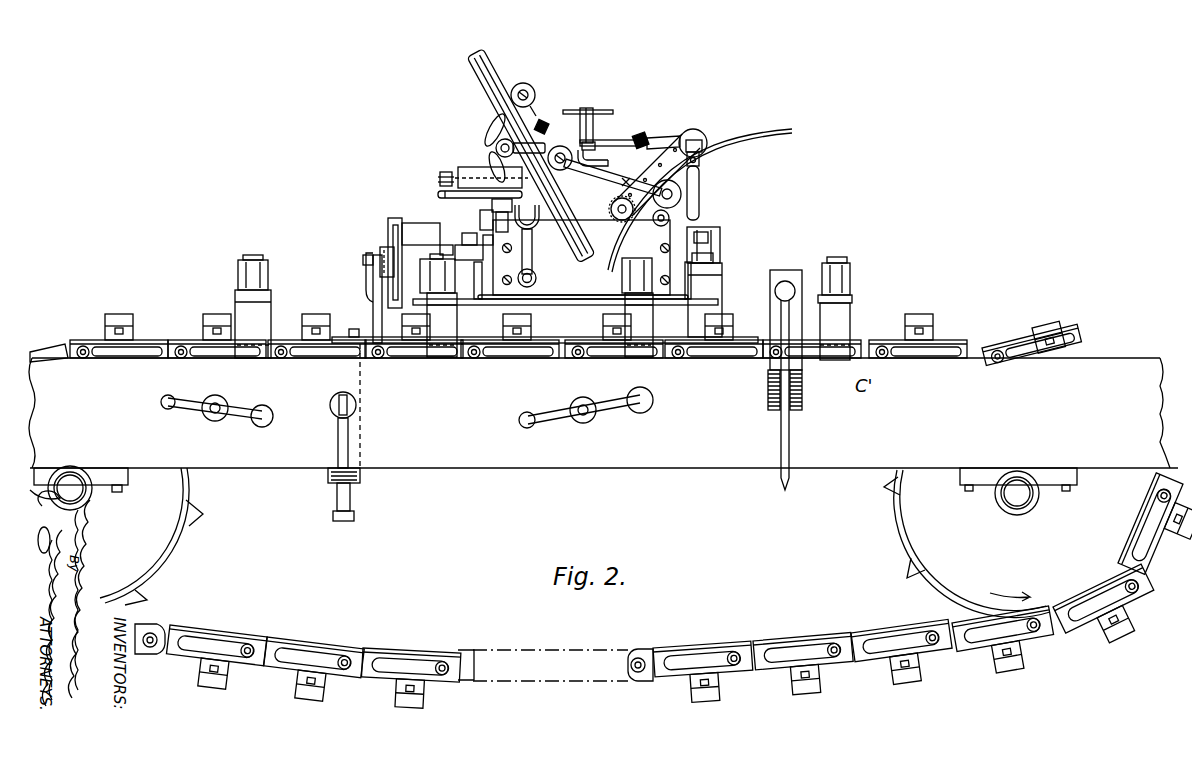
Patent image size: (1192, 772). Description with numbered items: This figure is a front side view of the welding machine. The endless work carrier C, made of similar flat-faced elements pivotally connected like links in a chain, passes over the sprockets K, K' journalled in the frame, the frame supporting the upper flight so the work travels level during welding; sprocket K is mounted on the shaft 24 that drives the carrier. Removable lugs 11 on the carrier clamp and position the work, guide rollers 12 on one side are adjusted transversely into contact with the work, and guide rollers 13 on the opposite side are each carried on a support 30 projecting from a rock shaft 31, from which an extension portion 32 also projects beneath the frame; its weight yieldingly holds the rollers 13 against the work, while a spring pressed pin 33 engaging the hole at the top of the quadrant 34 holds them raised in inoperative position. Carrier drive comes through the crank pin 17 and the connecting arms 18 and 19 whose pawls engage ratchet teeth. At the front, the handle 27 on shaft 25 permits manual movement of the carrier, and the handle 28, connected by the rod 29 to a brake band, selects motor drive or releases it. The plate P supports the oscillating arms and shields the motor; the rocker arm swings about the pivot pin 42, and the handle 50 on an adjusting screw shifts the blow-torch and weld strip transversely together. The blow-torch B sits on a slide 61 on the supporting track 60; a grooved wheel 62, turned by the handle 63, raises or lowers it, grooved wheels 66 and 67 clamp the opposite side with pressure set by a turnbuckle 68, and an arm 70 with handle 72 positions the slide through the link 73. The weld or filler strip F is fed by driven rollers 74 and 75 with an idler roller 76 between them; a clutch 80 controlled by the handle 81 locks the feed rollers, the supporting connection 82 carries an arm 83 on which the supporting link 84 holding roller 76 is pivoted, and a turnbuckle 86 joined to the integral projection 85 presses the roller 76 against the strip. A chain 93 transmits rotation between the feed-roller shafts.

The removable lugs 11 is at (118, 318).
The guide rollers 12 is at (236, 274).
The guide rollers 13 is at (408, 254).
The crank pin 17 is at (360, 250).
The connecting arm 18 is at (362, 279).
The connecting arm 19 is at (372, 300).
The shaft 24 is at (77, 494).
The shaft 25 is at (224, 398).
The handle 27 is at (170, 413).
The handle 28 is at (358, 450).
The rod 29 is at (356, 501).
The support 30 is at (718, 308).
The rock shaft 31 is at (552, 344).
The extension portion 32 is at (786, 490).
The spring pressed pin 33 is at (788, 288).
The quadrant 34 is at (776, 266).
The pivot pin 42 is at (590, 108).
The handle 50 is at (544, 418).
The supporting track 60 is at (466, 168).
The slide 61 is at (524, 164).
The grooved wheel 62 is at (494, 144).
The handle 63 is at (488, 125).
The grooved wheel 66 is at (530, 88).
The grooved wheel 67 is at (562, 146).
The turnbuckle 68 is at (543, 113).
The arm 70 is at (436, 180).
The handle 72 is at (440, 200).
The link 73 is at (478, 204).
The driven roller 74 is at (616, 220).
The driven roller 75 is at (700, 140).
The idler roller 76 is at (682, 192).
The clutch 80 is at (700, 150).
The handle 81 is at (694, 208).
The supporting connection 82 is at (624, 180).
The arm 83 is at (688, 243).
The supporting link 84 is at (666, 218).
The integral projection 85 is at (594, 156).
The turnbuckle 86 is at (644, 134).
The chain 93 is at (664, 142).
The blow-torch B is at (490, 74).
The endless work carrier C is at (44, 348).
The weld or filler strip F is at (614, 250).
The sprocket K is at (118, 536).
The sprocket K' is at (980, 543).
The plate P is at (581, 257).